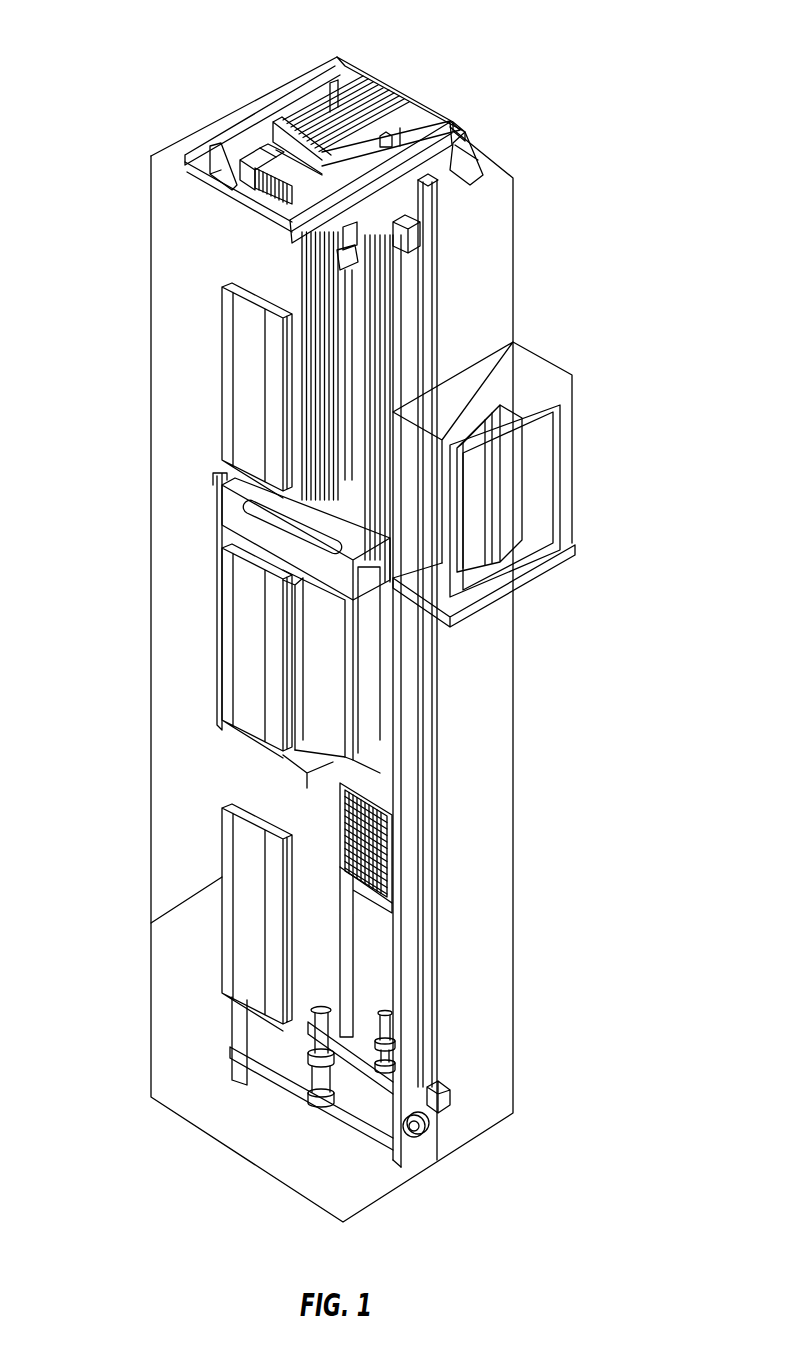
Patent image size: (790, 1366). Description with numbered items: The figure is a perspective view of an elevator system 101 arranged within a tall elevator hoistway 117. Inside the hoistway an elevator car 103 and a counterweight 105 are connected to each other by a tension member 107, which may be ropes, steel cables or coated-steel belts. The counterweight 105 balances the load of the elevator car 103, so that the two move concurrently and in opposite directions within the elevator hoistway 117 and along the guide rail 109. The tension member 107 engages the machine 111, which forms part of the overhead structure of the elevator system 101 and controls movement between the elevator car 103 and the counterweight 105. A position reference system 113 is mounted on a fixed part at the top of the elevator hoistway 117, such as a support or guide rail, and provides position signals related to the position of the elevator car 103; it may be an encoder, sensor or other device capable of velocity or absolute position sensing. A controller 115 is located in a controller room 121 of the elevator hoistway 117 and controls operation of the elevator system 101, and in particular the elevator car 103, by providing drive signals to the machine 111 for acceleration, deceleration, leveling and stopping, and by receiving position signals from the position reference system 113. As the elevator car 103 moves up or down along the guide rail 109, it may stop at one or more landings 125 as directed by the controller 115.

The elevator system 101 is at (530, 112).
The elevator car 103 is at (337, 687).
The counterweight 105 is at (387, 860).
The tension member 107 is at (338, 388).
The guide rail 109 is at (413, 777).
The machine 111 is at (250, 152).
The position reference system 113 is at (405, 237).
The controller 115 is at (517, 490).
The elevator hoistway 117 is at (194, 775).
The controller room 121 is at (572, 376).
The landings 125 is at (222, 375).